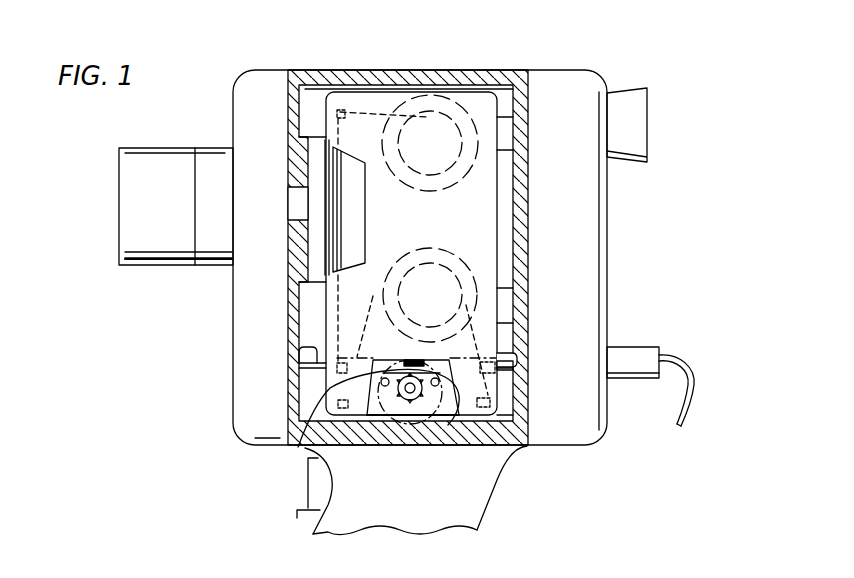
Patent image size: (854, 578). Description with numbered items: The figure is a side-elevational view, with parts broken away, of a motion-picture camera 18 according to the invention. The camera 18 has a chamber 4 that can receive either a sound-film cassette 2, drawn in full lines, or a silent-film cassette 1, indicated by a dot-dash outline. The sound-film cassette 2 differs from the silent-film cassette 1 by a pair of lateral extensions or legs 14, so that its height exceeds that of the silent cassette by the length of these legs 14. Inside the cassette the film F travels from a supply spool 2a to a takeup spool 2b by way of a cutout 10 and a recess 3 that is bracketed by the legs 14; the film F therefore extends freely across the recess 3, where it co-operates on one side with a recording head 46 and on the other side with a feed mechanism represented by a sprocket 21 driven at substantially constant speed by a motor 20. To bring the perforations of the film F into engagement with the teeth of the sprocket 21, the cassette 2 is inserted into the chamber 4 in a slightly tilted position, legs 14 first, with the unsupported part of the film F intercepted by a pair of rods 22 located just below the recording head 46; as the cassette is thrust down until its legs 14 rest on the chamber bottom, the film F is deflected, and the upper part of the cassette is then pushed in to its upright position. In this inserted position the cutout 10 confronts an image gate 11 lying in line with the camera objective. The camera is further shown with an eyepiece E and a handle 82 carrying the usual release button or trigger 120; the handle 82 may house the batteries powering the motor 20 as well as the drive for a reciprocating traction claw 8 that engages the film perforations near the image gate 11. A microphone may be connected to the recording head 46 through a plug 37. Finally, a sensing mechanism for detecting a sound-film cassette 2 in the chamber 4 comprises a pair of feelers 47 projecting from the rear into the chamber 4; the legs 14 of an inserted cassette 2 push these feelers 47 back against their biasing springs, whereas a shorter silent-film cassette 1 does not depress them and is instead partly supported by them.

The silent-film cassette 1 is at (413, 253).
The sound-film cassette 2 is at (470, 239).
The supply spool 2a is at (457, 118).
The takeup spool 2b is at (400, 262).
The recess 3 is at (380, 417).
The chamber 4 is at (505, 208).
The reciprocating traction claw 8 is at (326, 171).
The cutout 10 is at (365, 201).
The image gate 11 is at (297, 217).
The legs 14 is at (517, 410).
The motion-picture camera 18 is at (593, 231).
The motor 20 is at (441, 400).
The sprocket 21 is at (414, 420).
The rods 22 is at (490, 393).
The plug 37 is at (637, 352).
The recording head 46 is at (410, 358).
The feelers 47 is at (288, 351).
The handle 82 is at (483, 518).
The release button or trigger 120 is at (297, 518).
The lens D is at (163, 159).
The eyepiece E is at (648, 125).
The film F is at (328, 389).